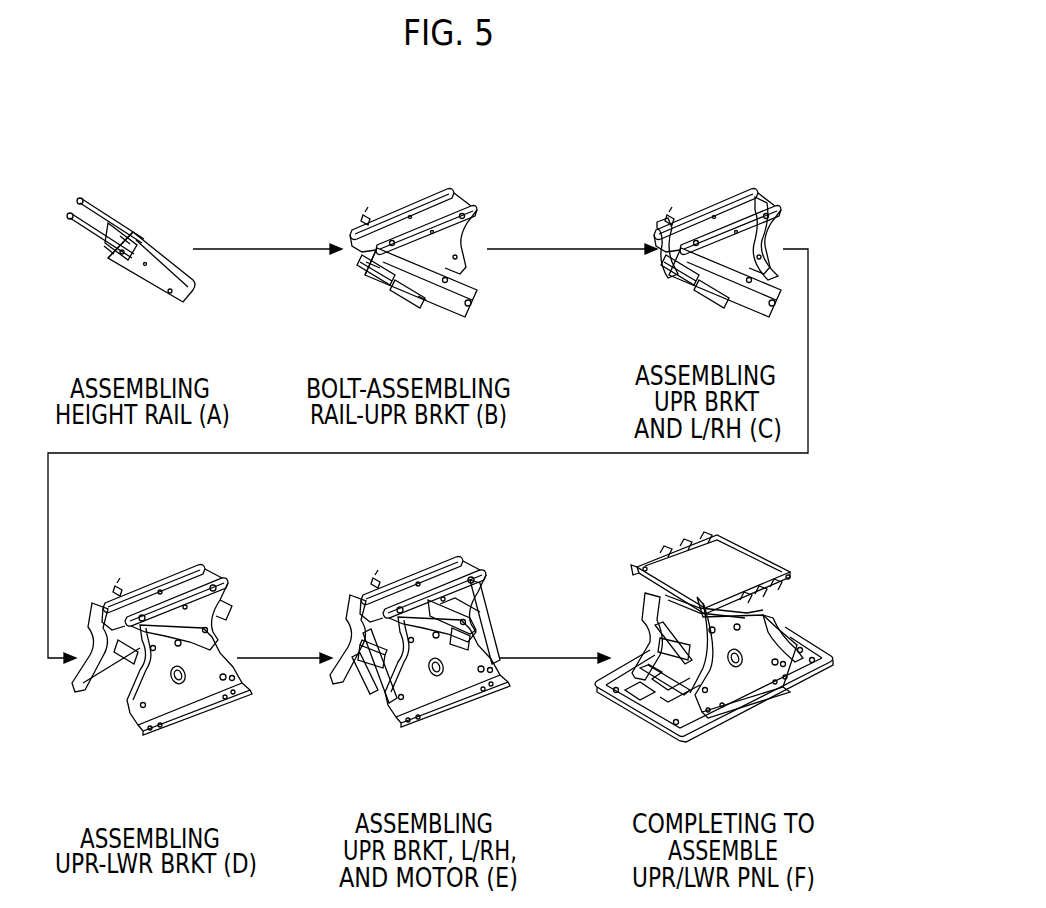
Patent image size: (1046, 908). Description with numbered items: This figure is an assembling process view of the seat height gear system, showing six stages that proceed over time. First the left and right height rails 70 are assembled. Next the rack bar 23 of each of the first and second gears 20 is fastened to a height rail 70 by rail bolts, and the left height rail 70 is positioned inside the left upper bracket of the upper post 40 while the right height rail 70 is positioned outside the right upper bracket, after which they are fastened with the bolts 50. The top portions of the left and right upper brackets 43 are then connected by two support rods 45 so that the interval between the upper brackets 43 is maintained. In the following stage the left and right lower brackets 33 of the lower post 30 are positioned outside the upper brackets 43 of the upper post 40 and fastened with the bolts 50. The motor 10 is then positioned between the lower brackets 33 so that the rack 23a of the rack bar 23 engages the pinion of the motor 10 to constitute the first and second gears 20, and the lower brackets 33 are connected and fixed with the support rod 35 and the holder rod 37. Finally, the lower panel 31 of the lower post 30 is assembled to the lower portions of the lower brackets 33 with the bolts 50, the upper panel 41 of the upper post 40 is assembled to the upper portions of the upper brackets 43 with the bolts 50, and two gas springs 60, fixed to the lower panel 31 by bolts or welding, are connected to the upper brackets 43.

The motor 10 is at (462, 690).
The first and second gears 20 is at (377, 607).
The rack bar 23 is at (360, 232).
The rack 23a is at (417, 307).
The lower post 30 is at (563, 718).
The lower panel 31 is at (650, 703).
The lower bracket 33 is at (85, 662).
The support rod 35 is at (363, 610).
The holder rod 37 is at (363, 677).
The upper post 40 is at (826, 485).
The upper panel 41 is at (737, 560).
The upper bracket 43 is at (752, 196).
The support rod 45 is at (683, 217).
The bolt 50 is at (387, 248).
The gas spring 60 is at (793, 683).
The height rail 70 is at (166, 258).